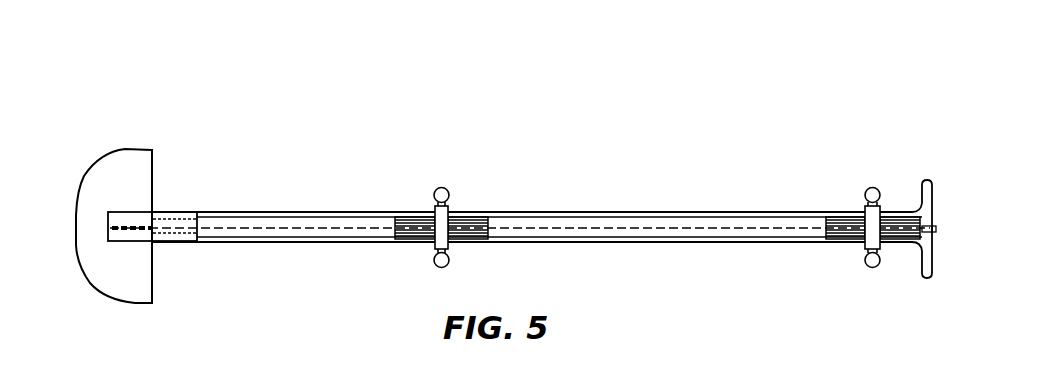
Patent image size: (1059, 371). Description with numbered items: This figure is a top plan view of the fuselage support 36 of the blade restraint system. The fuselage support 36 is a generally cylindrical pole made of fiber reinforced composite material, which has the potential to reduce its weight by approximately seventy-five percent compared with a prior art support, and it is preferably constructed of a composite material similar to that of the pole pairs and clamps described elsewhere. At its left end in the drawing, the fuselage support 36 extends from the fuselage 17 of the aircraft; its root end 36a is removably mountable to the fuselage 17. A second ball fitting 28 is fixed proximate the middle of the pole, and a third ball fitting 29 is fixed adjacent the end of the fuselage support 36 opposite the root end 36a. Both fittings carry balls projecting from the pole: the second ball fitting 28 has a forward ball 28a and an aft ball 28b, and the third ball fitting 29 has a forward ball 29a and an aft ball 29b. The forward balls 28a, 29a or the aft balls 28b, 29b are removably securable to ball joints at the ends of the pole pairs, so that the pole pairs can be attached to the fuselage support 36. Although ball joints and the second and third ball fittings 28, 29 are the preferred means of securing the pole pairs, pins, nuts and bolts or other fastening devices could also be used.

The fuselage 17 is at (153, 183).
The fuselage support 36 is at (663, 204).
The root end 36a is at (157, 246).
The second ball fitting 28 is at (442, 214).
The forward ball 28a is at (435, 195).
The aft ball 28b is at (435, 260).
The third ball fitting 29 is at (875, 214).
The forward ball 29a is at (866, 195).
The aft ball 29b is at (866, 260).